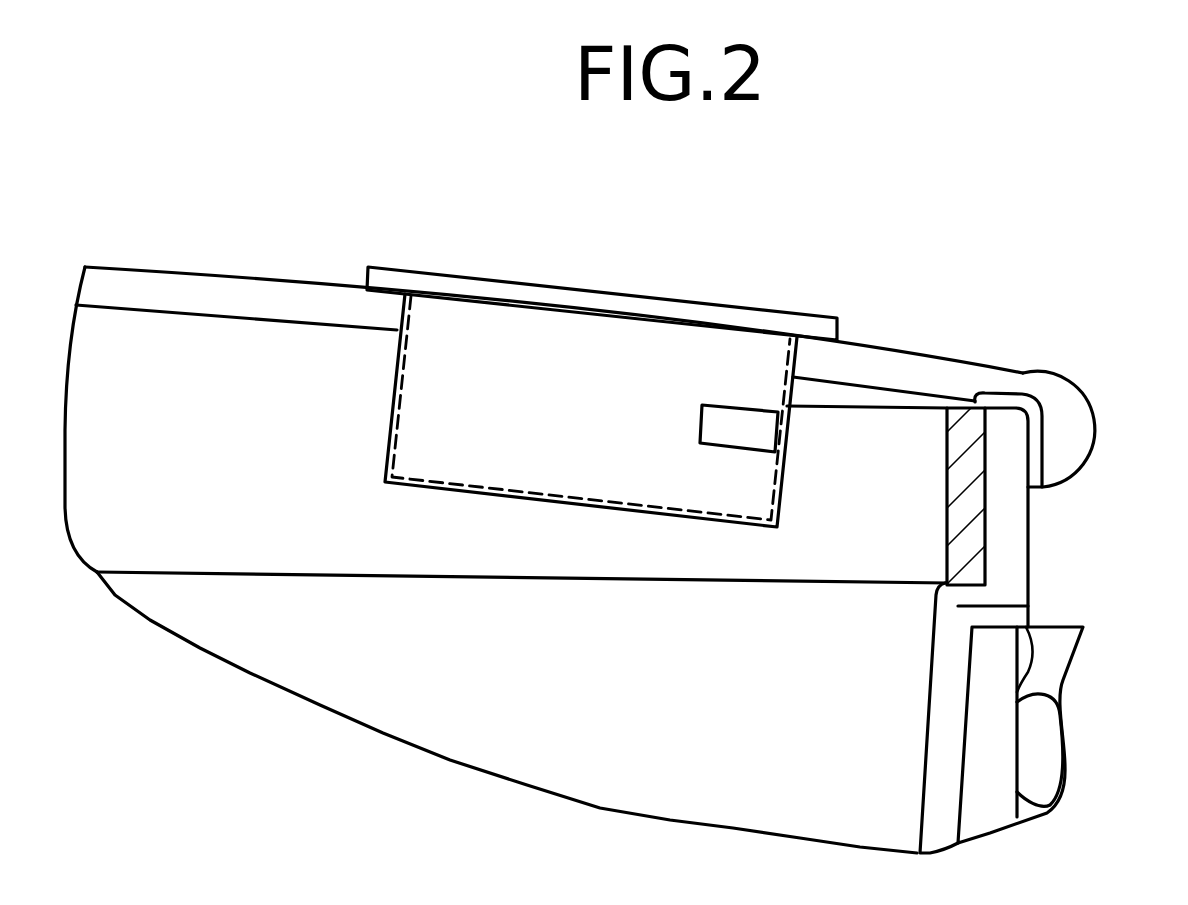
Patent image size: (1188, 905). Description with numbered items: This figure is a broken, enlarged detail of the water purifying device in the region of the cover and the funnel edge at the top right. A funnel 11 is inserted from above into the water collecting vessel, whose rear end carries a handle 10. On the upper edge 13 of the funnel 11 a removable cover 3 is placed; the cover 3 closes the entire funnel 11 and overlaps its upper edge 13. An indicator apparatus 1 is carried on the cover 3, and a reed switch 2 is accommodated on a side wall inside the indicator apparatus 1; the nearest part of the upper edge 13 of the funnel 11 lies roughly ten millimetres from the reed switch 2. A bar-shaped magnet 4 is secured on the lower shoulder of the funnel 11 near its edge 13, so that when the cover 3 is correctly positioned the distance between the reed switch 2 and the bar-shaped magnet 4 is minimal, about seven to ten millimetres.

The indicator apparatus 1 is at (482, 290).
The reed switch 2 is at (740, 427).
The cover 3 is at (958, 375).
The bar-shaped magnet 4 is at (963, 515).
The handle 10 is at (997, 680).
The funnel 11 is at (862, 667).
The edge of the funnel 13 is at (1005, 433).